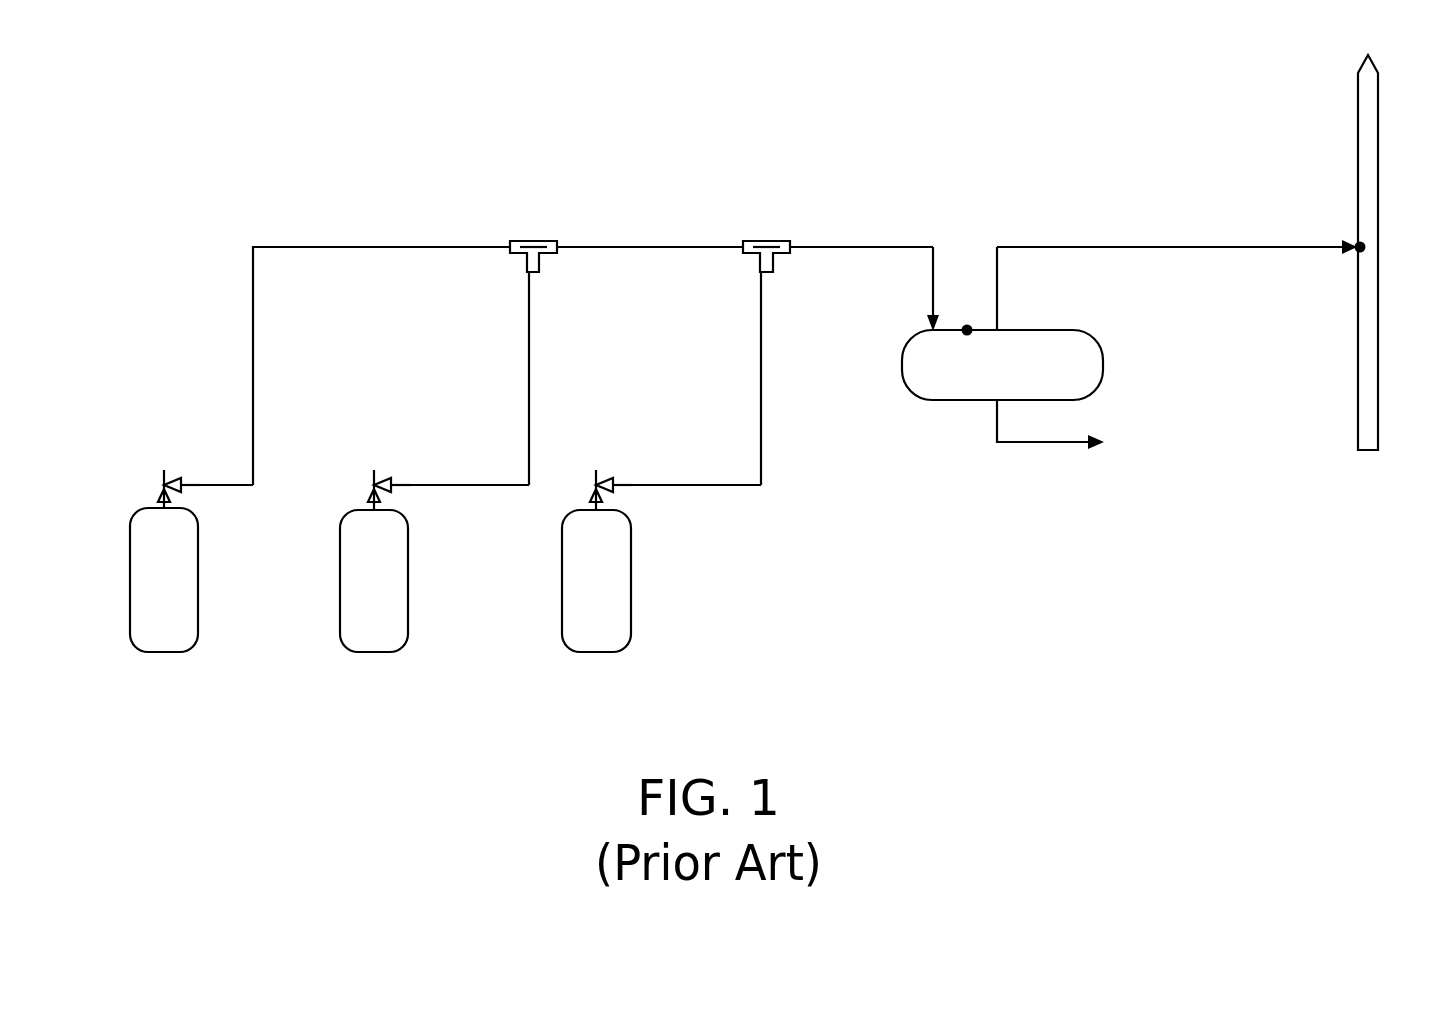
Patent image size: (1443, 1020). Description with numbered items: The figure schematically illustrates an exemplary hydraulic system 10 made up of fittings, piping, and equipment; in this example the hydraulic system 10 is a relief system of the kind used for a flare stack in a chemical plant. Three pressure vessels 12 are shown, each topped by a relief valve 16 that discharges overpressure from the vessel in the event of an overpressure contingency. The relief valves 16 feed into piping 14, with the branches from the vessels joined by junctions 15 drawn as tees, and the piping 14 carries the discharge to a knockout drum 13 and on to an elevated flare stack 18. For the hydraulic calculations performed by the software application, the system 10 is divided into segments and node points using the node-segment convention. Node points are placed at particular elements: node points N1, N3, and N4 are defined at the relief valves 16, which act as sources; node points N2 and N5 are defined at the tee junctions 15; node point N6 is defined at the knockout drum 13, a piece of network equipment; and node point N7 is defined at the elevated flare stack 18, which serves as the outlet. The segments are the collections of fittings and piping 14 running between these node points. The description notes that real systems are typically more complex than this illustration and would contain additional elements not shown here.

The hydraulic system 10 is at (147, 214).
The pressure vessel 12 is at (130, 548).
The knockout drum 13 is at (902, 362).
The piping 14 is at (333, 246).
The junction 15 is at (517, 255).
The relief valve 16 is at (162, 486).
The elevated flare stack 18 is at (1378, 117).
The node point N1 is at (183, 488).
The node point N2 is at (530, 240).
The node point N3 is at (393, 488).
The node point N4 is at (615, 488).
The node point N5 is at (762, 240).
The node point N6 is at (964, 322).
The node point N7 is at (1355, 240).